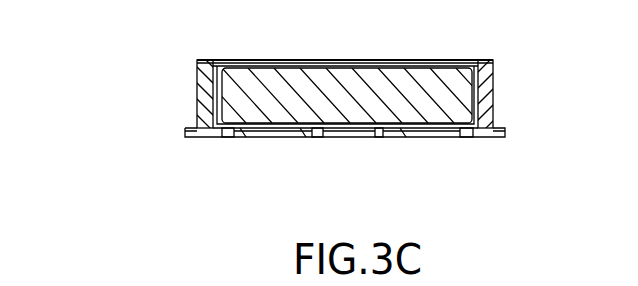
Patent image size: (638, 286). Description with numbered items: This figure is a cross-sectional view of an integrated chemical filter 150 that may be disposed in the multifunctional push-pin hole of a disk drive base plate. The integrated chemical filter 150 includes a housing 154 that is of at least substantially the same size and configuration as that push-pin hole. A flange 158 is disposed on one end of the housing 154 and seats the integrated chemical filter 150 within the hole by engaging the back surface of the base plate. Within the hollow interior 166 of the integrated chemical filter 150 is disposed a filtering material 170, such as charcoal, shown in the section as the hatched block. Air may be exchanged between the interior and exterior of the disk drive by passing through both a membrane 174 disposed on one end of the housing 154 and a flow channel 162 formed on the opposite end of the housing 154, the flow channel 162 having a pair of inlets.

The integrated chemical filter 150 is at (503, 52).
The housing 154 is at (493, 73).
The flange 158 is at (186, 130).
The flow channel 162 is at (278, 130).
The hollow interior 166 is at (215, 85).
The filtering material 170 is at (254, 100).
The membrane 174 is at (370, 60).